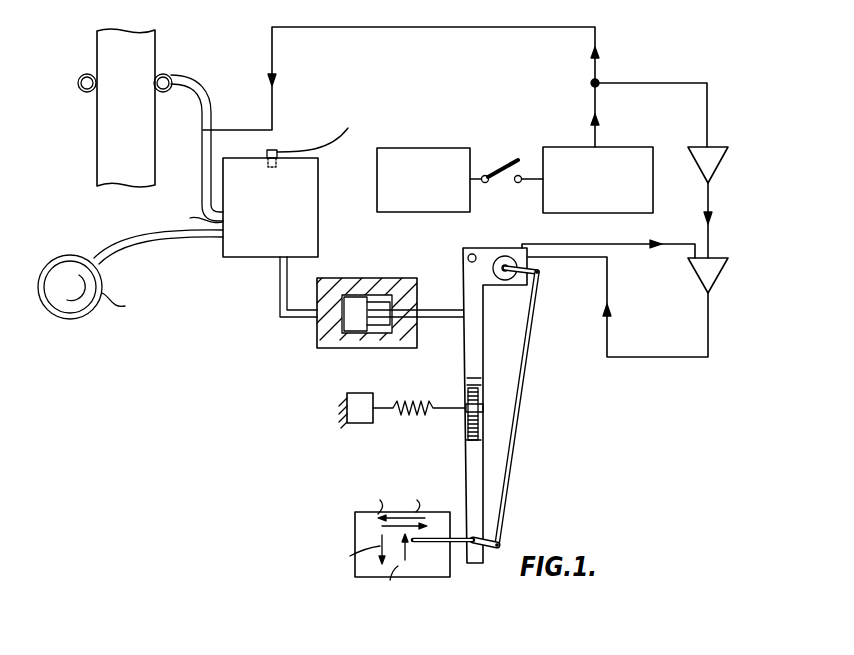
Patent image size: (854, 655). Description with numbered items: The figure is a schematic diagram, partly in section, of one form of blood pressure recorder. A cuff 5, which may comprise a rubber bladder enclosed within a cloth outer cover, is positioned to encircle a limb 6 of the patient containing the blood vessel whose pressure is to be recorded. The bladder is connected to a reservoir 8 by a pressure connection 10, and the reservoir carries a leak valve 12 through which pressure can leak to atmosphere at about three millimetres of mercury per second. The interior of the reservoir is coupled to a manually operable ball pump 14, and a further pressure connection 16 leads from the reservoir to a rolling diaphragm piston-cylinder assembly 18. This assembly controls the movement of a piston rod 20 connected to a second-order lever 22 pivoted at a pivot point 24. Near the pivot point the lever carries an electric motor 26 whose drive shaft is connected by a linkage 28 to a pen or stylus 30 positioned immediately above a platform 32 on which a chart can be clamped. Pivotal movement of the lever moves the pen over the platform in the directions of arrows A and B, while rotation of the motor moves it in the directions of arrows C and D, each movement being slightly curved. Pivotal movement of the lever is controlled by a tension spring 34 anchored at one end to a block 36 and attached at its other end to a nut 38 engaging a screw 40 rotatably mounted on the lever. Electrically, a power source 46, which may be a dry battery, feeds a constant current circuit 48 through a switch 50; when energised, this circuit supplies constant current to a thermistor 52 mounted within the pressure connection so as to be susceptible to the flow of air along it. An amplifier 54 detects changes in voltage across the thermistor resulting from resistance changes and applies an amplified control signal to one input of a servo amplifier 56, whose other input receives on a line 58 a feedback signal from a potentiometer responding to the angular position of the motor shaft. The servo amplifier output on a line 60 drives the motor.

The cuff 5 is at (86, 71).
The limb 6 is at (108, 155).
The reservoir 8 is at (282, 213).
The pressure connection 10 is at (204, 98).
The leak valve 12 is at (279, 149).
The pump 14 is at (82, 300).
The pressure connection 16 is at (282, 284).
The piston-cylinder assembly 18 is at (345, 351).
The piston rod 20 is at (449, 300).
The lever 22 is at (487, 345).
The pivot point 24 is at (468, 259).
The electric motor 26 is at (502, 252).
The linkage 28 is at (524, 368).
The pen 30 is at (458, 548).
The platform 32 is at (354, 572).
The tension spring 34 is at (413, 418).
The block 36 is at (365, 417).
The nut 38 is at (483, 408).
The screw 40 is at (468, 426).
The power source 46 is at (440, 147).
The constant current circuit 48 is at (610, 214).
The switch 50 is at (503, 183).
The thermistor 52 is at (313, 61).
The amplifier 54 is at (703, 167).
The servo amplifier 56 is at (705, 275).
The line 58 is at (632, 245).
The line 60 is at (658, 357).